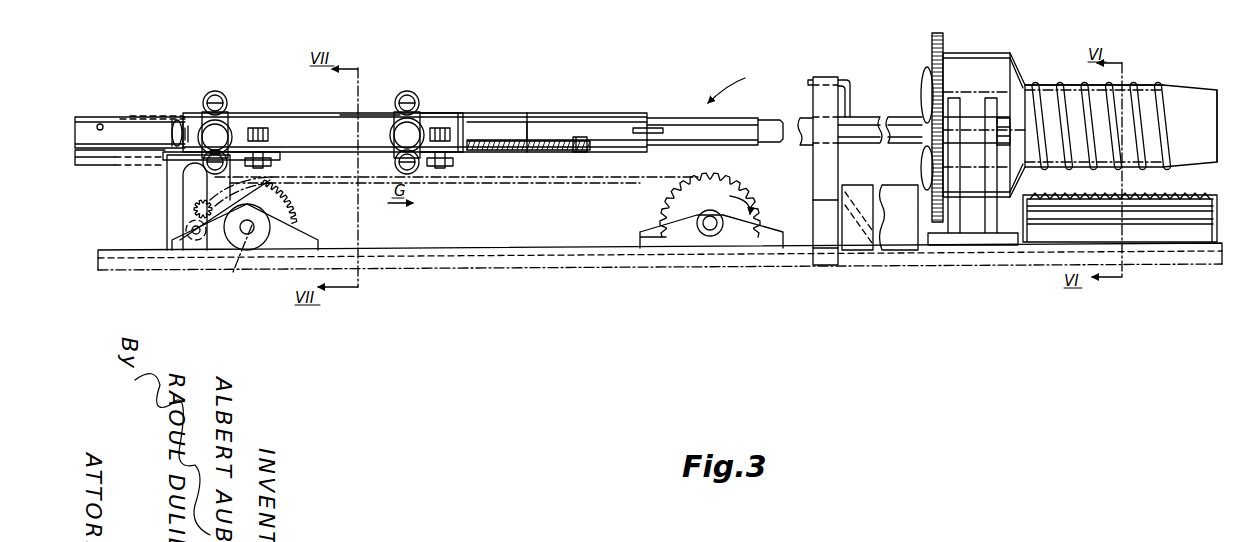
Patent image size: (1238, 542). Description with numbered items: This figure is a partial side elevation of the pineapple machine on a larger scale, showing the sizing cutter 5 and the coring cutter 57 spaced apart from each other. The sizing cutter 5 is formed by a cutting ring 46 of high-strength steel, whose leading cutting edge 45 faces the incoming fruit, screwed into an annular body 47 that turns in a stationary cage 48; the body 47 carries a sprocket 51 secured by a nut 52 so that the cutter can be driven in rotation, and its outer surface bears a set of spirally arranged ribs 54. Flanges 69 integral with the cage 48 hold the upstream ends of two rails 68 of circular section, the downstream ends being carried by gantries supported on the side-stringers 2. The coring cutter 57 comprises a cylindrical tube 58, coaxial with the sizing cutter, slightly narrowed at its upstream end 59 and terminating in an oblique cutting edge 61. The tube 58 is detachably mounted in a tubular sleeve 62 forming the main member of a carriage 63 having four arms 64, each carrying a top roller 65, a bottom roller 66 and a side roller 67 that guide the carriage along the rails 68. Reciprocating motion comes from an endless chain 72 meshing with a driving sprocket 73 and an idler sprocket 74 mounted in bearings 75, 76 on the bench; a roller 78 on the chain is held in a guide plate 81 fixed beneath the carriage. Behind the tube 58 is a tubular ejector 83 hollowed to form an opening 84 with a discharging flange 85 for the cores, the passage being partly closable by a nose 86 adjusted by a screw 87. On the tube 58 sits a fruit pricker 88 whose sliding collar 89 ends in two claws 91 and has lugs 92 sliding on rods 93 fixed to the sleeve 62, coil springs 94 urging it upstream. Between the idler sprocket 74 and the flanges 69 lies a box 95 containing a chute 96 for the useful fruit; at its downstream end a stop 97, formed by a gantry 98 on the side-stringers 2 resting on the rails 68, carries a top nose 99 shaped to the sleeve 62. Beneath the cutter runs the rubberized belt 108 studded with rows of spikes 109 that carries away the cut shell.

The side-stringers 2 is at (499, 259).
The sizing cutter 5 is at (1142, 87).
The leading cutting edge 45 is at (1218, 112).
The cutting ring 46 is at (1177, 107).
The annular body 47 is at (1045, 100).
The stationary cage 48 is at (1011, 62).
The sprocket 51 is at (932, 47).
The nut 52 is at (922, 82).
The spirally arranged ribs 54 is at (1133, 86).
The coring cutter 57 is at (730, 81).
The cylindrical tube 58 is at (733, 126).
The upstream end 59 is at (771, 122).
The oblique cutting edge 61 is at (803, 130).
The tubular sleeve 62 is at (370, 128).
The carriage 63 is at (297, 110).
The arms 64 is at (425, 118).
The top roller 65 is at (217, 92).
The bottom roller 66 is at (418, 172).
The side roller 67 is at (252, 128).
The rails 68 is at (338, 115).
The flanges 69 is at (990, 100).
The endless chain 72 is at (461, 178).
The driving sprocket 73 is at (285, 201).
The idler sprocket 74 is at (730, 196).
The bearing 75 is at (285, 234).
The bearing 76 is at (640, 234).
The roller 78 is at (190, 231).
The guide plate 81 is at (177, 202).
The tubular ejector 83 is at (147, 114).
The opening 84 is at (97, 122).
The discharging flange 85 is at (114, 162).
The nose 86 is at (178, 160).
The screw 87 is at (180, 120).
The fruit pricker 88 is at (549, 111).
The sliding collar 89 is at (605, 122).
The claws 91 is at (655, 130).
The lugs 92 is at (580, 152).
The rods 93 is at (518, 135).
The coil springs 94 is at (497, 151).
The box 95 is at (903, 210).
The chute 96 is at (852, 210).
The stop 97 is at (822, 76).
The gantry 98 is at (822, 171).
The top nose 99 is at (847, 80).
The rubberized belt 108 is at (1160, 199).
The spikes 109 is at (1100, 199).